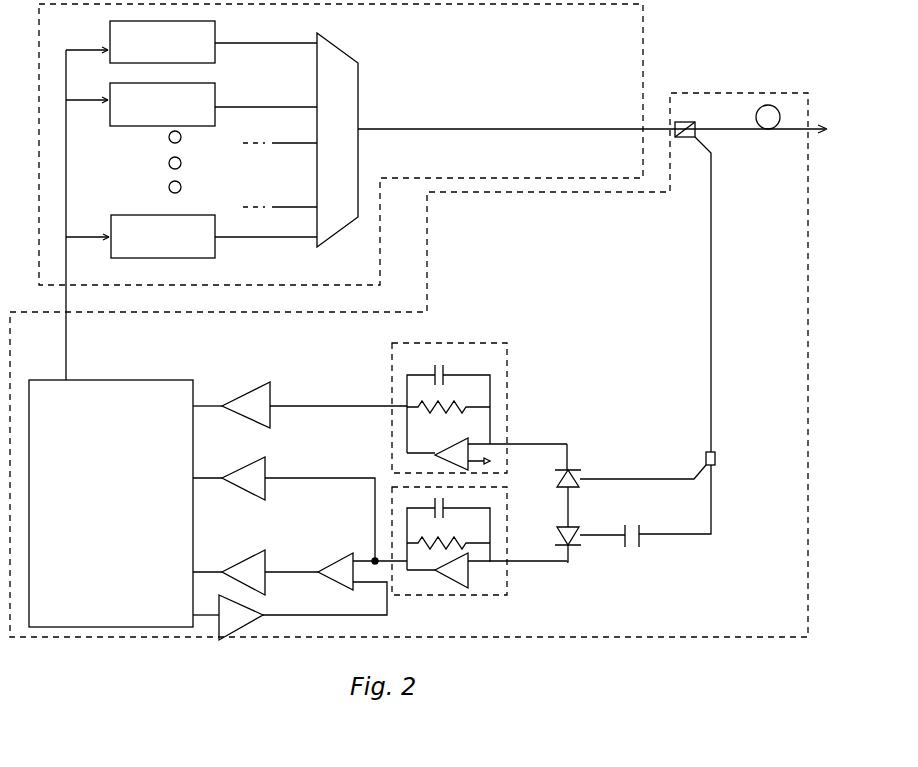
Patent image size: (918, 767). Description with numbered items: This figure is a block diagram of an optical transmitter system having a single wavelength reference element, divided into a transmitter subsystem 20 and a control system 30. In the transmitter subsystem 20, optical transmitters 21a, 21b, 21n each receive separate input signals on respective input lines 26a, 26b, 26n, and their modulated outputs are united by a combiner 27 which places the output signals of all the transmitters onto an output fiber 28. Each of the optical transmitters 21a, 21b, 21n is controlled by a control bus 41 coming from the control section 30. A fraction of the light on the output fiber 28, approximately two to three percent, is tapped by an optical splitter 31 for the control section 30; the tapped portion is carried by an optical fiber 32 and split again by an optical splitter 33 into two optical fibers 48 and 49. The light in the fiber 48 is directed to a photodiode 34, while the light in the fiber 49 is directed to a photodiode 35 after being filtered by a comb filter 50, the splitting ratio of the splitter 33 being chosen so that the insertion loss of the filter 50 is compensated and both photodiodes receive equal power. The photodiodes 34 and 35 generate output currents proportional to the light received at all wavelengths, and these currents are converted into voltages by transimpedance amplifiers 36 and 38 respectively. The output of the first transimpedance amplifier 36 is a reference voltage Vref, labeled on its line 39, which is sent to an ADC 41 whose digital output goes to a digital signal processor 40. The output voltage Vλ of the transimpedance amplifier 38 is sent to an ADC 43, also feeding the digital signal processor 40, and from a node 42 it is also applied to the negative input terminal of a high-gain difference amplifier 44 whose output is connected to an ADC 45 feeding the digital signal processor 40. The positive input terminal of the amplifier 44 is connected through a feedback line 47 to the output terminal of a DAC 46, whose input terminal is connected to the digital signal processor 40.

The transmitter subsystem 20 is at (608, 170).
The optical transmitter 21a is at (217, 33).
The optical transmitter 21b is at (217, 95).
The optical transmitter 21n is at (203, 215).
The input line 26a is at (153, 16).
The input line 26b is at (153, 78).
The input line 26n is at (140, 210).
The combiner 27 is at (352, 89).
The output fiber 28 is at (564, 128).
The control system 30 is at (779, 606).
The optical splitter 31 is at (690, 121).
The optical fiber 32 is at (713, 233).
The optical splitter 33 is at (716, 458).
The photodiode 34 is at (560, 482).
The photodiode 35 is at (556, 538).
The transimpedance amplifier 36 is at (500, 349).
The transimpedance amplifier 38 is at (499, 583).
The reference voltage signal line 39 is at (331, 398).
The digital signal processor 40 is at (174, 380).
The control bus 41 is at (270, 382).
The summing node 42 is at (378, 572).
The ADC 43 is at (262, 458).
The difference amplifier 44 is at (326, 575).
The ADC 45 is at (258, 550).
The DAC 46 is at (255, 606).
The feedback signal line 47 is at (354, 616).
The optical fiber 48 is at (637, 478).
The optical fiber 49 is at (690, 536).
The comb filter 50 is at (635, 519).